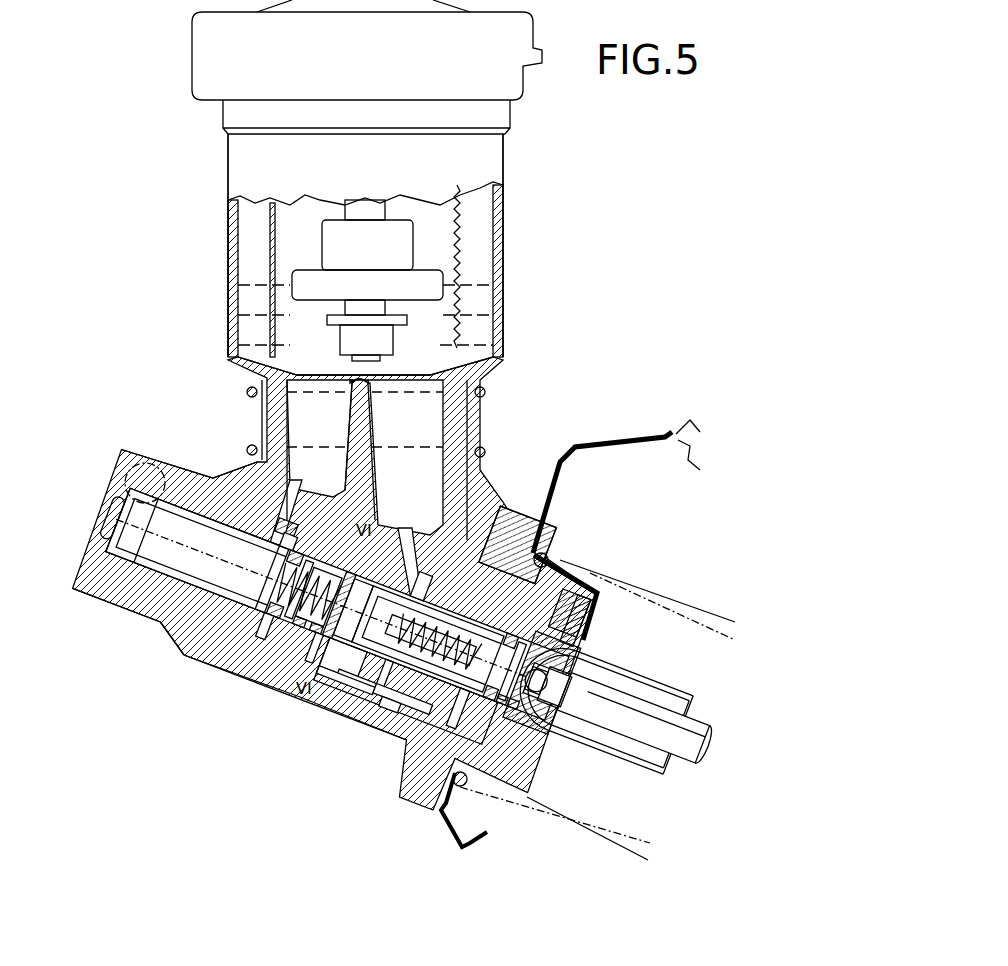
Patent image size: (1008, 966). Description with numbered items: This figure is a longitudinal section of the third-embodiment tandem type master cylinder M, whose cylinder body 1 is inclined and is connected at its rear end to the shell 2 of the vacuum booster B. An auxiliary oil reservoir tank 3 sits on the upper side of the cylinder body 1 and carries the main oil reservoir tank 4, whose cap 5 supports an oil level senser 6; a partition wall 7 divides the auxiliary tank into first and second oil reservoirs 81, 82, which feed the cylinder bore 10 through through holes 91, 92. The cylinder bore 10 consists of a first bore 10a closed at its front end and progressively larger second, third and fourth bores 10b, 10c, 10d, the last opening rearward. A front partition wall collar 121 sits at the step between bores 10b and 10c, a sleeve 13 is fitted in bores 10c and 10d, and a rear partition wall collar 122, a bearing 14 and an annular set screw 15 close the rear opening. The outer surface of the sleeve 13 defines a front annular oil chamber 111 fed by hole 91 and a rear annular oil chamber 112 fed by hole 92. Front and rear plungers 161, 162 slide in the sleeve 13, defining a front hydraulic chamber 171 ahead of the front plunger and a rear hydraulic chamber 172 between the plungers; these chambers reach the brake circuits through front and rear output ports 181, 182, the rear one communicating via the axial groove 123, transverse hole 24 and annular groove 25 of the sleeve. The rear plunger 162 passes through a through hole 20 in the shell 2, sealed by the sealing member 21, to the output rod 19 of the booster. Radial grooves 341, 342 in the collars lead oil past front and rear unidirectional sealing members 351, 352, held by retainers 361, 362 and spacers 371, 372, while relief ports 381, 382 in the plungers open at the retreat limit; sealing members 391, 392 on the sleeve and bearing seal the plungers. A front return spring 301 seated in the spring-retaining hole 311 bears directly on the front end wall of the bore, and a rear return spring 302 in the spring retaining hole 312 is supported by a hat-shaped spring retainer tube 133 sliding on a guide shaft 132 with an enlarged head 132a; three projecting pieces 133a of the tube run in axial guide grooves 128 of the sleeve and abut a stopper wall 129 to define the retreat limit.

The cylinder body 1 is at (165, 464).
The shell 2 is at (618, 437).
The auxiliary oil reservoir tank 3 is at (467, 418).
The main oil reservoir tank 4 is at (503, 228).
The cap 5 is at (523, 78).
The oil level senser 6 is at (333, 212).
The partition wall 7 is at (368, 410).
The first oil reservoir 81 is at (325, 427).
The second oil reservoir 82 is at (418, 453).
The front through hole 91 is at (293, 482).
The rear through hole 92 is at (405, 528).
The cylinder bore 10 is at (106, 588).
The first bore 10a is at (140, 604).
The second bore 10b is at (172, 640).
The third bore 10c is at (270, 685).
The fourth bore 10d is at (350, 715).
The front annular oil chamber 111 is at (278, 520).
The rear annular oil chamber 112 is at (370, 708).
The front partition wall collar 121 is at (260, 626).
The rear partition wall collar 122 is at (466, 722).
The axial groove 123 is at (385, 560).
The axial guide grooves 128 is at (294, 660).
The stopper wall 129 is at (375, 650).
The sleeve 13 is at (400, 700).
The guide shaft 132 is at (415, 690).
The enlarged head 132a is at (398, 660).
The spring retainer tube 133 is at (345, 636).
The projecting pieces 133a is at (350, 680).
The bearing 14 is at (548, 600).
The annular set screw 15 is at (582, 627).
The front plunger 161 is at (330, 600).
The rear plunger 162 is at (543, 683).
The front hydraulic chamber 171 is at (165, 548).
The rear hydraulic chamber 172 is at (380, 648).
The front output port 181 is at (140, 466).
The rear output port 182 is at (320, 540).
The output rod 19 is at (690, 738).
The through hole 20 is at (575, 660).
The sealing member 21 is at (590, 607).
The transverse hole 24 is at (336, 585).
The annular groove 25 is at (322, 512).
The front return spring 301 is at (128, 500).
The rear return spring 302 is at (530, 676).
The spring-retaining hole 311 is at (312, 590).
The spring retaining hole 312 is at (400, 632).
The radial groove 341 is at (290, 568).
The radial groove 342 is at (510, 642).
The front unidirectional sealing member 351 is at (272, 555).
The rear unidirectional sealing member 352 is at (440, 652).
The retainer 361 is at (290, 620).
The retainer 362 is at (470, 690).
The spacer 371 is at (298, 624).
The spacer 372 is at (482, 703).
The front relief port 381 is at (274, 552).
The rear relief port 382 is at (500, 640).
The sealing member 391 is at (312, 630).
The sealing member 392 is at (500, 718).
The tandem type master cylinder M is at (211, 436).
The vacuum booster B is at (686, 414).